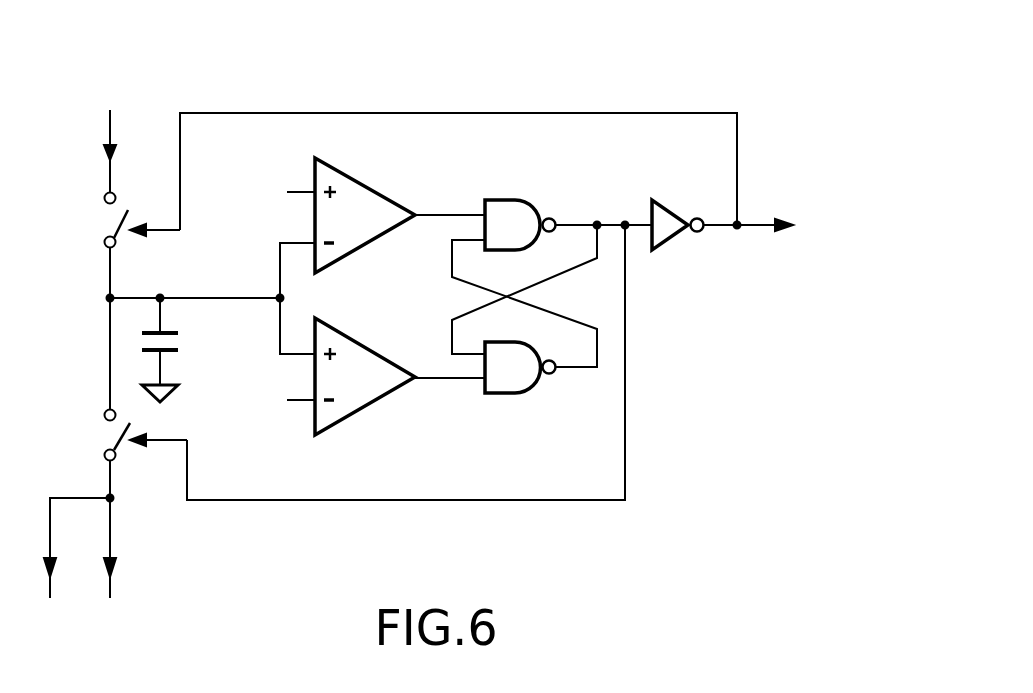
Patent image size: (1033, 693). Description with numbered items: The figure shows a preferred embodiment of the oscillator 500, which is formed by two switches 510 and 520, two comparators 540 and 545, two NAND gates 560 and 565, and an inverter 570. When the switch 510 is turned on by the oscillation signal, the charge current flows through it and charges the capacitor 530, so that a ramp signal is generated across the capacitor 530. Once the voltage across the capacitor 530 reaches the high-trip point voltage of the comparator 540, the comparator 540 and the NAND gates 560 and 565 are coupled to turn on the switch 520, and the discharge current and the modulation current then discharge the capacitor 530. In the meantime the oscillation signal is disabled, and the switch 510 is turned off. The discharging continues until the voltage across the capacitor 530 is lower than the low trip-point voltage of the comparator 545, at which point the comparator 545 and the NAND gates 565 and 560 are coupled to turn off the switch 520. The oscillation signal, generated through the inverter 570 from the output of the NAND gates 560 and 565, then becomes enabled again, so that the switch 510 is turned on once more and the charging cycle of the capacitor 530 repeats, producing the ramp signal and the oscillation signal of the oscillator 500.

The oscillator 500 is at (780, 32).
The switch 510 is at (100, 213).
The switch 520 is at (100, 423).
The capacitor 530 is at (185, 340).
The comparator 540 is at (380, 186).
The comparator 545 is at (350, 334).
The NAND gate 560 is at (505, 192).
The NAND gate 565 is at (510, 395).
The inverter 570 is at (672, 210).